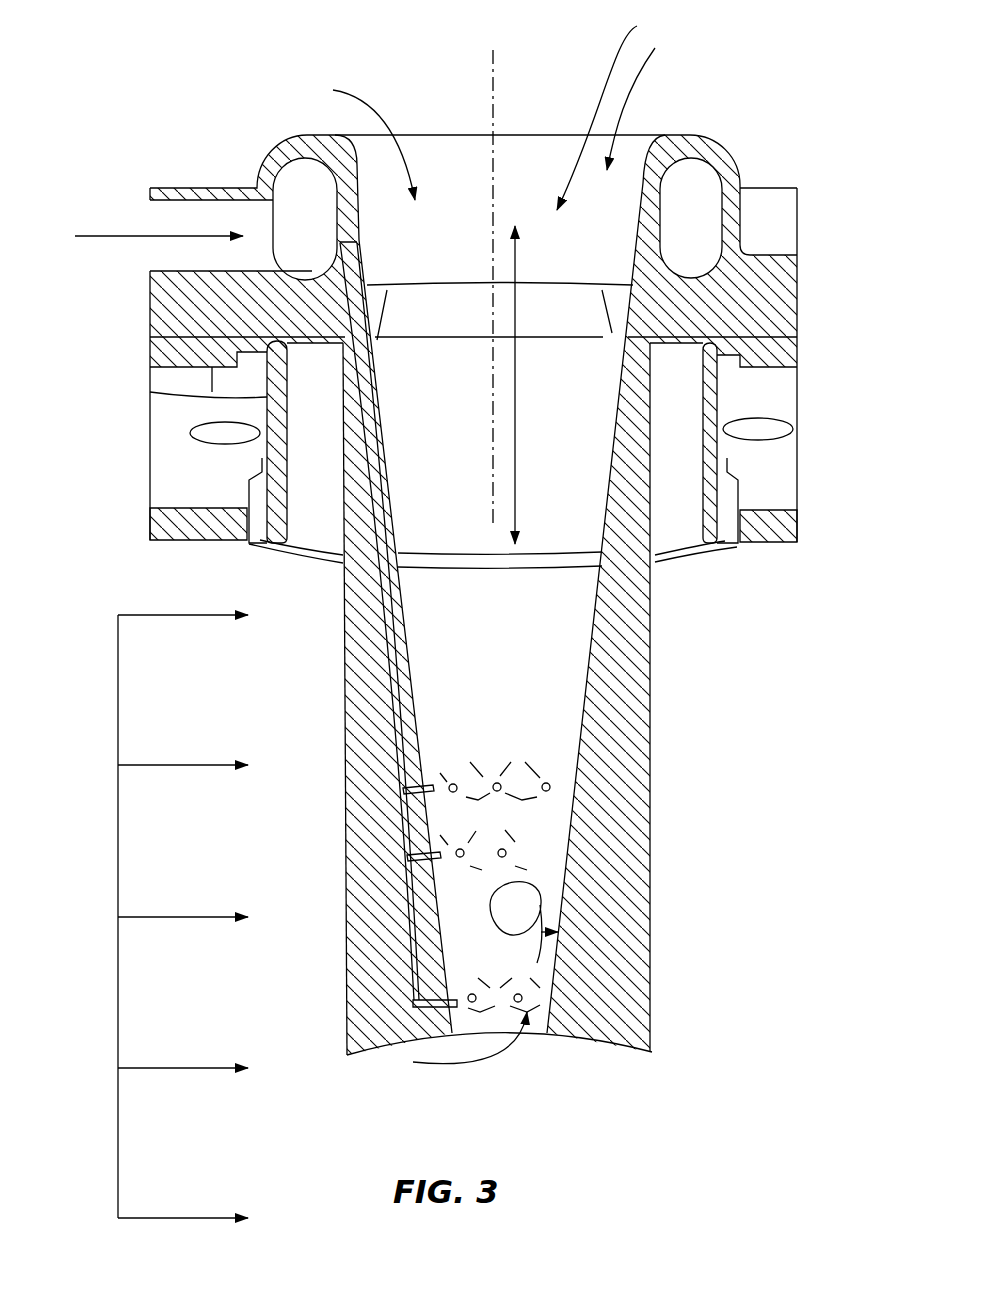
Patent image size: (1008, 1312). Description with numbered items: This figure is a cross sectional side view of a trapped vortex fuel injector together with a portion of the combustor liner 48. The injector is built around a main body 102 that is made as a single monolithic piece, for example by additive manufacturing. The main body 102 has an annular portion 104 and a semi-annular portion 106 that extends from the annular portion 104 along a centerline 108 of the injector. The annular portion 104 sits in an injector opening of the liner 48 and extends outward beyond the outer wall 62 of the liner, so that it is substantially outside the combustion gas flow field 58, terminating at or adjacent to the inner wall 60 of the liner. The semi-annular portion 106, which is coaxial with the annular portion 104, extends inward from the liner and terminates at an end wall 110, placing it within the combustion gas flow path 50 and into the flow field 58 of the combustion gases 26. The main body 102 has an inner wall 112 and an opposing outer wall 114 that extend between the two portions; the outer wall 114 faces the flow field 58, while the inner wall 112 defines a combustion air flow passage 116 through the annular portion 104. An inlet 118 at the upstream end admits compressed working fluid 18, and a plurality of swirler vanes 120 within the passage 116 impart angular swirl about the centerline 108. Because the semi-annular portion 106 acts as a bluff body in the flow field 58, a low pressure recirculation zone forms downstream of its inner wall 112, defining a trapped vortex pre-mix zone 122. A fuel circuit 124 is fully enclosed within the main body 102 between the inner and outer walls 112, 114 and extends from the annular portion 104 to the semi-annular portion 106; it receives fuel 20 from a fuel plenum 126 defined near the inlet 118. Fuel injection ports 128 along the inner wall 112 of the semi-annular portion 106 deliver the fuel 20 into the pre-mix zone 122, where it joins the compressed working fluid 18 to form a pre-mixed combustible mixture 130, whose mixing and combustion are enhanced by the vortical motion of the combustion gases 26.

The compressed working fluid 18 is at (363, 98).
The fuel 20 is at (133, 217).
The combustion gases 26 is at (153, 613).
The liner 48 is at (148, 530).
The combustion gas flow path 50 is at (698, 1054).
The combustion gas flow field 58 is at (118, 890).
The inner wall 60 is at (778, 548).
The outer wall 62 is at (780, 493).
The main body 102 is at (785, 293).
The annular portion 104 is at (650, 407).
The semi-annular portion 106 is at (563, 747).
The centerline 108 is at (493, 88).
The end wall 110 is at (375, 1064).
The inner wall 112 is at (387, 467).
The outer wall 114 is at (343, 718).
The combustion air flow passage 116 is at (517, 273).
The inlet 118 is at (632, 118).
The swirler vanes 120 is at (405, 335).
The trapped vortex pre-mix zone 122 is at (532, 919).
The fuel circuit 124 is at (342, 290).
The fuel plenum 126 is at (297, 182).
The fuel injection port 128 is at (456, 783).
The pre-mixed combustible mixture 130 is at (550, 863).